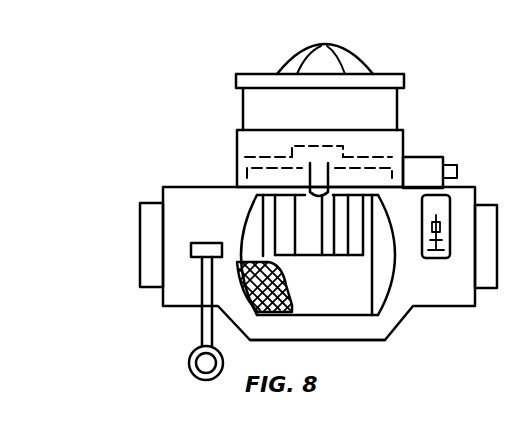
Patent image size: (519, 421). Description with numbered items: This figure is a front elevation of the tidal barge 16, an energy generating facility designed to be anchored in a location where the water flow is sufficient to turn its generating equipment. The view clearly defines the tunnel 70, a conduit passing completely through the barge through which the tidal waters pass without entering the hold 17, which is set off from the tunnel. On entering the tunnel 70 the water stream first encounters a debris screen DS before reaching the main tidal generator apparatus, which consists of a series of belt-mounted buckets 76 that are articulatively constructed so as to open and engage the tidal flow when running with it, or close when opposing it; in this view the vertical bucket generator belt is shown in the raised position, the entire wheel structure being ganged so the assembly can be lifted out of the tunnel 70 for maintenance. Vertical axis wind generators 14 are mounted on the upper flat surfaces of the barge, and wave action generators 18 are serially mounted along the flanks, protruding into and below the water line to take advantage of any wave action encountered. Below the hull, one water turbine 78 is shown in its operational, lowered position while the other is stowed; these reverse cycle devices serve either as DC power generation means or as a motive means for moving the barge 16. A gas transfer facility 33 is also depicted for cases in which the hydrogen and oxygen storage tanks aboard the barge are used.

The vertical axis wind generator 14 is at (302, 58).
The tidal barge 16 is at (156, 301).
The hold 17 is at (184, 206).
The wave action generator 18 is at (150, 224).
The gas transfer facility 33 is at (418, 168).
The tunnel 70 is at (350, 297).
The bucket 76 is at (307, 216).
The water turbine 78 is at (192, 356).
The debris screen DS is at (284, 283).